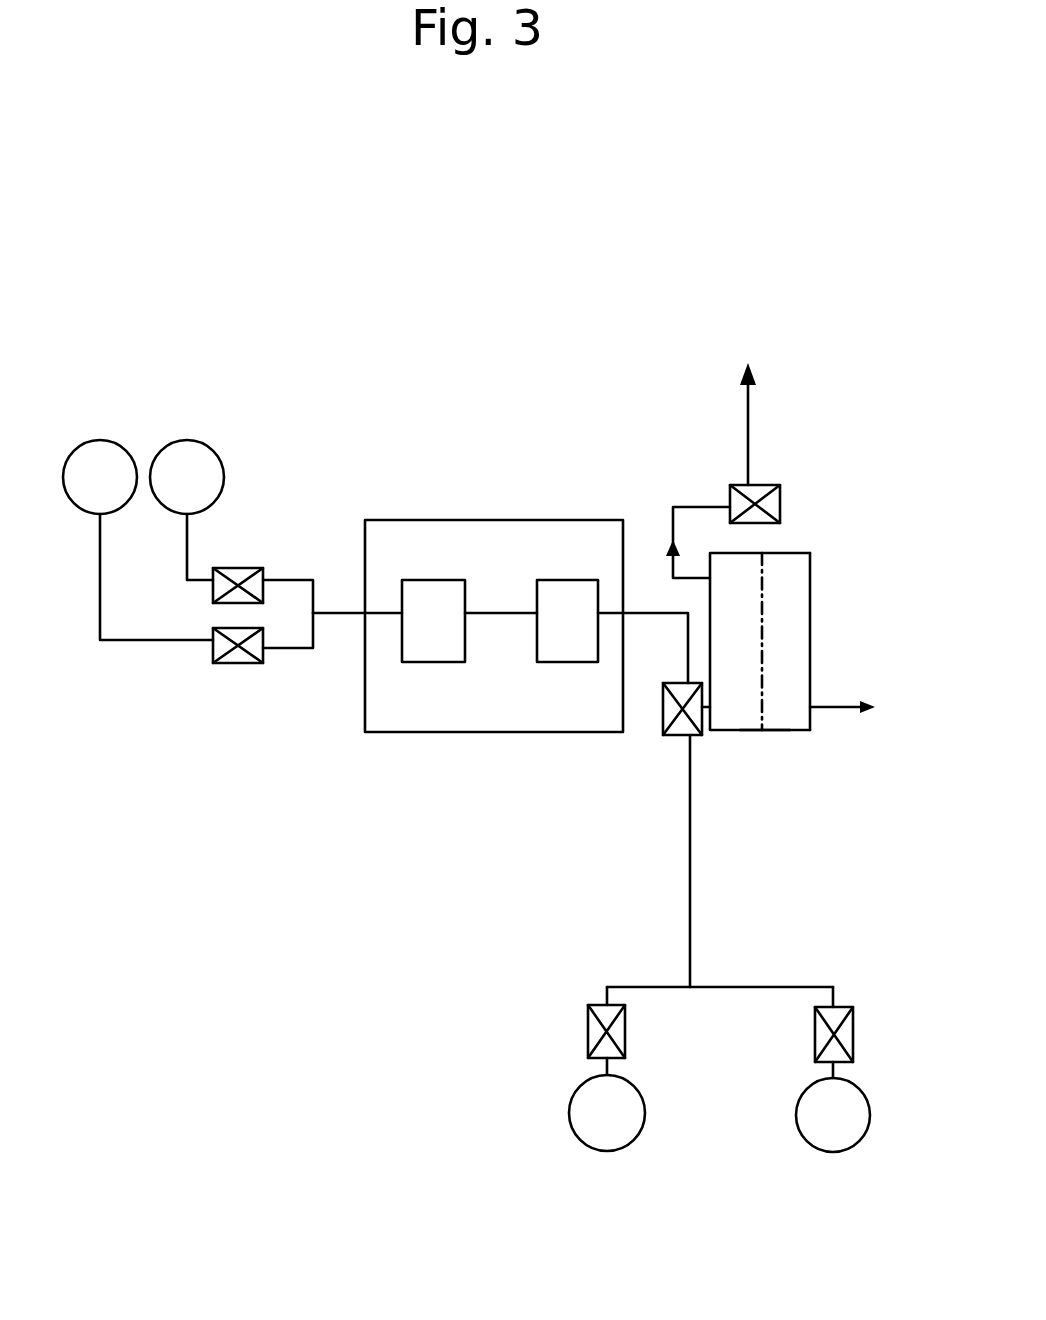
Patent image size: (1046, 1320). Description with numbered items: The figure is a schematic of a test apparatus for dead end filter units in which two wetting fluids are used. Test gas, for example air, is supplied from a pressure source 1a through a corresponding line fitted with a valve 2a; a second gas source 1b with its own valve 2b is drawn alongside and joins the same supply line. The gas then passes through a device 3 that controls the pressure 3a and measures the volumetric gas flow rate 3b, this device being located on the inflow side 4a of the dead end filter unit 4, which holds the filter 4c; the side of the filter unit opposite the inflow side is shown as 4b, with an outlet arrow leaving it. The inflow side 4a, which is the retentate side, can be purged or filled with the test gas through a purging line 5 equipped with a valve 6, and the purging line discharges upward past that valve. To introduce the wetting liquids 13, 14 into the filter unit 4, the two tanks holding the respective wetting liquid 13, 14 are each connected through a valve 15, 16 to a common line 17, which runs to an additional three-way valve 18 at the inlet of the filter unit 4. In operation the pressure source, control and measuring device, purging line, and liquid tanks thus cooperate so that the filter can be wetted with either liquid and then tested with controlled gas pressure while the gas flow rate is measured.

The pressure source 1a is at (93, 439).
The second gas source 1b is at (185, 439).
The valve 2a is at (238, 665).
The second valve 2b is at (232, 568).
The device for controlling the pressure and measuring the volumetric gas flow rate 3 is at (511, 732).
The pressure control 3a is at (431, 662).
The volumetric gas flow rate measurement 3b is at (568, 580).
The dead end filter unit 4 is at (745, 730).
The inflow side 4a is at (733, 578).
The second chamber of vessel 4b is at (797, 628).
The filter 4c is at (765, 681).
The purging line 5 is at (685, 506).
The valve 6 is at (757, 485).
The wetting liquid 13 is at (600, 1151).
The wetting liquid 14 is at (830, 1152).
The valve 15 is at (588, 1025).
The valve 16 is at (853, 1025).
The line 17 is at (691, 912).
The three-way valve 18 is at (664, 736).